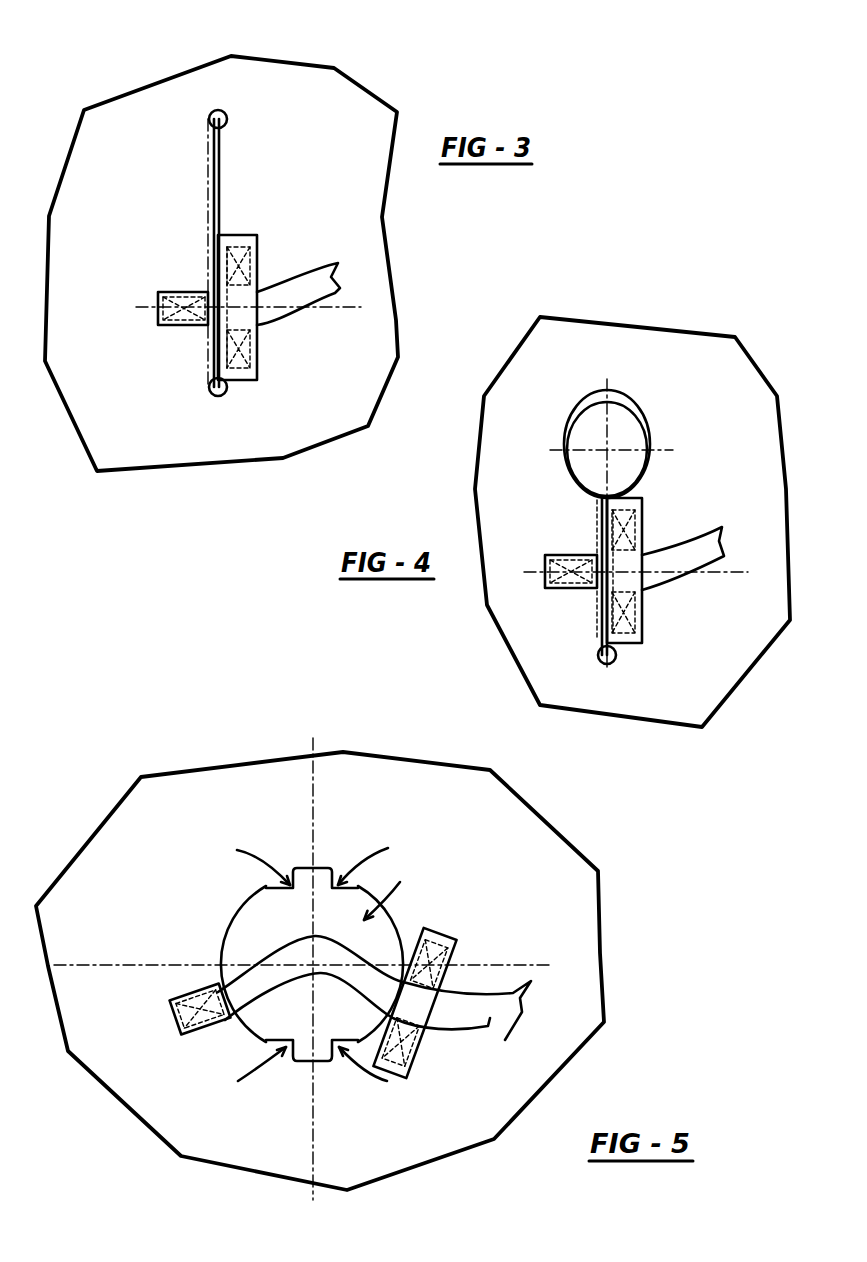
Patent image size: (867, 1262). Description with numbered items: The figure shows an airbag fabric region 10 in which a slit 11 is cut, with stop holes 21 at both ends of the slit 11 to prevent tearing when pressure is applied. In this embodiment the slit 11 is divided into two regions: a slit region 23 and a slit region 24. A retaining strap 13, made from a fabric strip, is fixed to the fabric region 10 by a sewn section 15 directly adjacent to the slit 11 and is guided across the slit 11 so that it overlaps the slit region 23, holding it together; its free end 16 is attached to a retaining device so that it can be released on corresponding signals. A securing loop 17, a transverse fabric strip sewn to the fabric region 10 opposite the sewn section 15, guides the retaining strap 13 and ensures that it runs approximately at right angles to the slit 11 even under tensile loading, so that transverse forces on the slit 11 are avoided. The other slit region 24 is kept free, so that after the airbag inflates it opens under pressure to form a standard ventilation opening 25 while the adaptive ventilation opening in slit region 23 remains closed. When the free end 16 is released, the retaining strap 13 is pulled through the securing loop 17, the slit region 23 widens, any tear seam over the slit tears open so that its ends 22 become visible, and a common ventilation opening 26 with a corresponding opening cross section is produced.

In FIG. 3, the fabric region 10 is at (345, 158).
In FIG. 4, the fabric region 10 is at (697, 365).
In FIG. 5, the fabric region 10 is at (540, 891).
In FIG. 3, the slit 11 is at (223, 194).
In FIG. 4, the slit 11 is at (602, 615).
In FIG. 3, the retaining strap 13 is at (313, 280).
In FIG. 4, the retaining strap 13 is at (697, 561).
In FIG. 3, the sewn section 15 is at (158, 322).
In FIG. 4, the sewn section 15 is at (570, 588).
In FIG. 5, the sewn section 15 is at (172, 1013).
In FIG. 5, the free end 16 is at (490, 1026).
In FIG. 5, the securing loop 17 is at (420, 1057).
In FIG. 3, the stop holes 21 is at (212, 118).
In FIG. 5, the stop holes 21 is at (325, 865).
In FIG. 5, the ends of tear seam 22 is at (257, 859).
In FIG. 3, the slit region 23 is at (212, 339).
In FIG. 4, the slit region 23 is at (643, 590).
In FIG. 3, the slit region 24 is at (214, 175).
In FIG. 4, the standard ventilation opening 25 is at (587, 425).
In FIG. 5, the common ventilation opening 26 is at (400, 882).